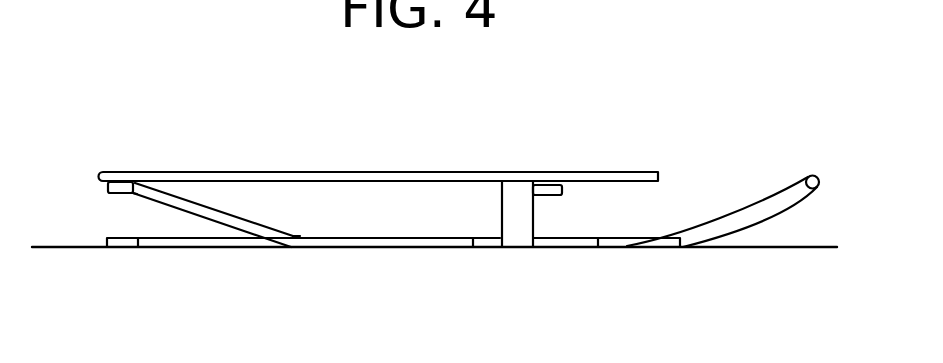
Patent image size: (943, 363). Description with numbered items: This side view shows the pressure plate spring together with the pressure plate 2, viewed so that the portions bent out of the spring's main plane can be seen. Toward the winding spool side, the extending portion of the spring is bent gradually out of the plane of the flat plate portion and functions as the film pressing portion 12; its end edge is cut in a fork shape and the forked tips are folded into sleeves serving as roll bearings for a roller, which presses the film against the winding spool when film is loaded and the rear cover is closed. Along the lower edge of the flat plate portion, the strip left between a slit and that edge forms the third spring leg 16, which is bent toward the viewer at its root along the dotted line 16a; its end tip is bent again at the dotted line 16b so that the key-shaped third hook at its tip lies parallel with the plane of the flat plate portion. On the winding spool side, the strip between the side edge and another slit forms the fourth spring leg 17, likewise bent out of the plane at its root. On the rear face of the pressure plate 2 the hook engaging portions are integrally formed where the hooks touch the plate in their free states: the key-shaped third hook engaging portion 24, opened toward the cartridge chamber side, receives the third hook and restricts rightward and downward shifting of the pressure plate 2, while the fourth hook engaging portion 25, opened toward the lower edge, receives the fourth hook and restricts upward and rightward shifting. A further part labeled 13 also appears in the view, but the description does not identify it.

The pressure plate 2 is at (393, 172).
The third hook engaging portion 24 is at (108, 191).
The third spring leg 16 is at (227, 211).
The dotted line 16b is at (133, 194).
The dotted line 16a is at (300, 237).
The fourth spring leg 17 is at (502, 212).
The fourth hook engaging portion 25 is at (562, 188).
The film pressing portion 12 is at (770, 200).
The runner rail 13 is at (683, 240).